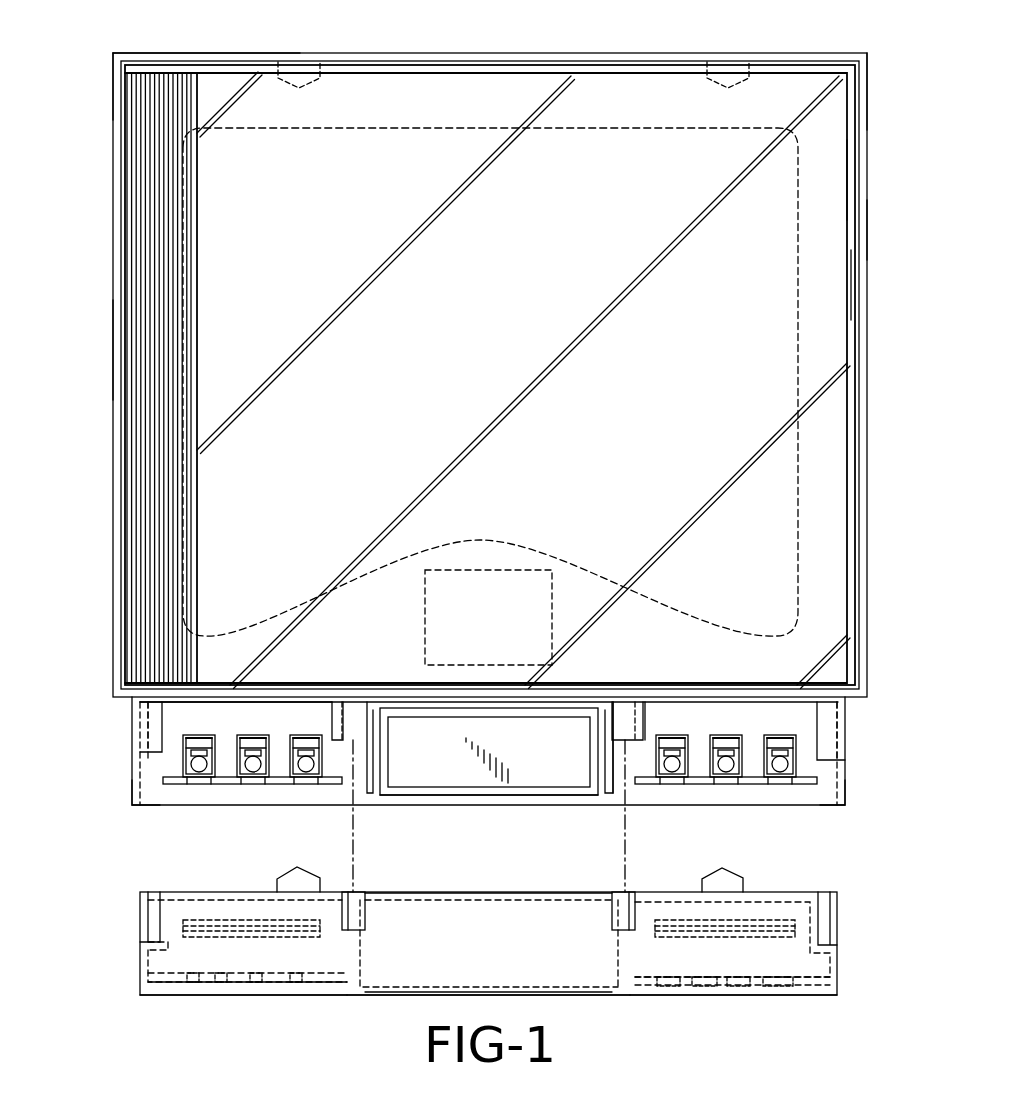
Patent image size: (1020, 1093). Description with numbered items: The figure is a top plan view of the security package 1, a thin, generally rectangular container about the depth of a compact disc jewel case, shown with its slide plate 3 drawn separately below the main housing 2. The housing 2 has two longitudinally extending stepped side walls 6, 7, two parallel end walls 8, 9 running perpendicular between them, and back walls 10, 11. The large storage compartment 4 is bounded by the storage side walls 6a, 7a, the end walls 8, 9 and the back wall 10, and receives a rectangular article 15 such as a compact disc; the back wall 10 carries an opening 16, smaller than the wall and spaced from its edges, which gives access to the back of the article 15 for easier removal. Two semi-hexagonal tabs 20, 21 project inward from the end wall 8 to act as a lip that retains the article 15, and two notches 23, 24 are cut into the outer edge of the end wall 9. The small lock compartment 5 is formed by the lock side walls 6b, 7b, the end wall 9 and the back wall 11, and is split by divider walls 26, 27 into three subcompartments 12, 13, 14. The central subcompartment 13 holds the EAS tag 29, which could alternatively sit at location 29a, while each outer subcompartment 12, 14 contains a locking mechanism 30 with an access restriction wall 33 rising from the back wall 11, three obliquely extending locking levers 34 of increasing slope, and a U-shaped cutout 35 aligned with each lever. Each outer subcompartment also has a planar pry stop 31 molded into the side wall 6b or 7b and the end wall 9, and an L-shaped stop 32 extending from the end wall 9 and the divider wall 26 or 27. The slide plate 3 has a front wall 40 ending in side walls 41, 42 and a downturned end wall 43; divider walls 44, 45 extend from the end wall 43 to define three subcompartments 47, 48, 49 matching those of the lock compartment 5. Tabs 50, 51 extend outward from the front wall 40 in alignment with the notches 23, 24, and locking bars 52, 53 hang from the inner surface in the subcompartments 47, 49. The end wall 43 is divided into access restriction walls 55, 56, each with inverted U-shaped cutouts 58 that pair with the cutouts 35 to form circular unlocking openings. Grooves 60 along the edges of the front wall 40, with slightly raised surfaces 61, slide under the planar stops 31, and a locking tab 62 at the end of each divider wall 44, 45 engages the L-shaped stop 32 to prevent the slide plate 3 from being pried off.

The security package 1 is at (562, 50).
The main housing 2 is at (110, 347).
The slide plate 3 is at (846, 1003).
The storage compartment 4 is at (818, 190).
The lock compartment 5 is at (200, 716).
The side wall 6 is at (117, 614).
The storage side wall 6a is at (117, 103).
The lock side wall 6b is at (134, 790).
The side wall 7 is at (868, 236).
The storage side wall 7a is at (868, 115).
The lock side wall 7b is at (846, 800).
The end wall 8 is at (218, 52).
The end wall 9 is at (648, 710).
The back wall 10 is at (823, 287).
The back wall 11 is at (150, 766).
The subcompartment 12 is at (270, 725).
The subcompartment 13 is at (510, 728).
The subcompartment 14 is at (690, 718).
The article 15 is at (400, 100).
The opening 16 is at (460, 135).
The tab 20 is at (300, 72).
The tab 21 is at (723, 76).
The notch 23 is at (310, 696).
The notch 24 is at (703, 700).
The divider wall 26 is at (375, 766).
The divider wall 27 is at (607, 752).
The EAS tag 29 is at (556, 796).
The alternative tag location 29a is at (500, 568).
The locking mechanism 30 is at (230, 716).
The planar stop 31 is at (148, 739).
The L-shaped stop 32 is at (372, 722).
The access restriction wall 33 is at (168, 787).
The locking lever 34 is at (302, 738).
The cutout 35 is at (201, 785).
The front wall 40 is at (511, 910).
The side wall 41 is at (145, 962).
The side wall 42 is at (838, 963).
The end wall 43 is at (572, 1003).
The divider wall 44 is at (366, 966).
The divider wall 45 is at (627, 962).
The subcompartment 47 is at (272, 962).
The subcompartment 48 is at (468, 945).
The subcompartment 49 is at (696, 955).
The tab 50 is at (285, 878).
The tab 51 is at (710, 878).
The locking bar 52 is at (205, 925).
The locking bar 53 is at (775, 930).
The access restriction wall 55 is at (168, 985).
The access restriction wall 56 is at (800, 987).
The cutout 58 is at (190, 982).
The groove 60 is at (160, 937).
The raised surface 61 is at (145, 902).
The locking tab 62 is at (366, 924).